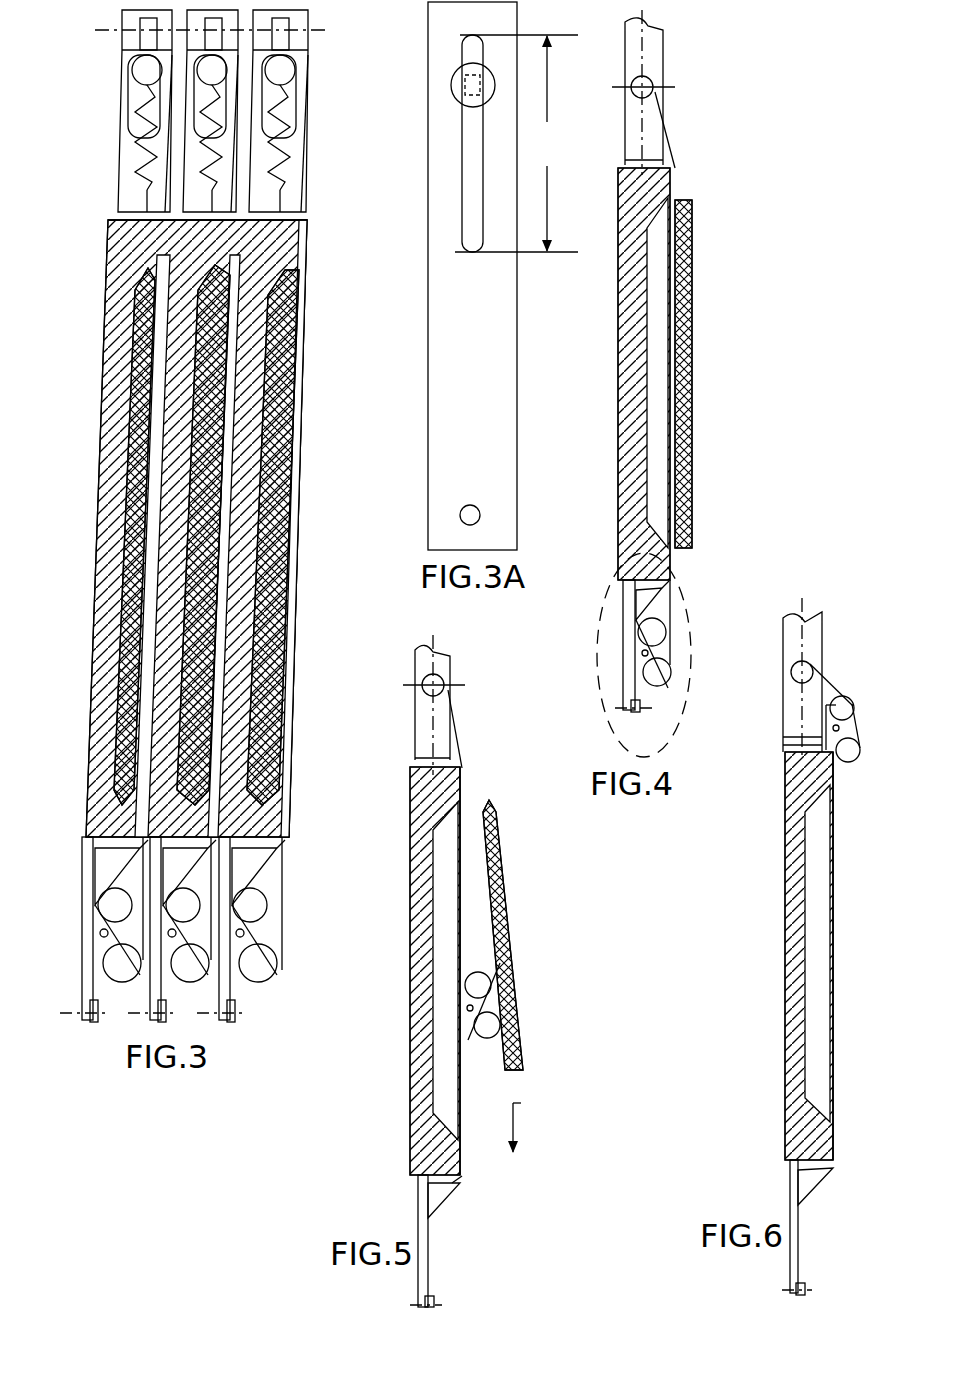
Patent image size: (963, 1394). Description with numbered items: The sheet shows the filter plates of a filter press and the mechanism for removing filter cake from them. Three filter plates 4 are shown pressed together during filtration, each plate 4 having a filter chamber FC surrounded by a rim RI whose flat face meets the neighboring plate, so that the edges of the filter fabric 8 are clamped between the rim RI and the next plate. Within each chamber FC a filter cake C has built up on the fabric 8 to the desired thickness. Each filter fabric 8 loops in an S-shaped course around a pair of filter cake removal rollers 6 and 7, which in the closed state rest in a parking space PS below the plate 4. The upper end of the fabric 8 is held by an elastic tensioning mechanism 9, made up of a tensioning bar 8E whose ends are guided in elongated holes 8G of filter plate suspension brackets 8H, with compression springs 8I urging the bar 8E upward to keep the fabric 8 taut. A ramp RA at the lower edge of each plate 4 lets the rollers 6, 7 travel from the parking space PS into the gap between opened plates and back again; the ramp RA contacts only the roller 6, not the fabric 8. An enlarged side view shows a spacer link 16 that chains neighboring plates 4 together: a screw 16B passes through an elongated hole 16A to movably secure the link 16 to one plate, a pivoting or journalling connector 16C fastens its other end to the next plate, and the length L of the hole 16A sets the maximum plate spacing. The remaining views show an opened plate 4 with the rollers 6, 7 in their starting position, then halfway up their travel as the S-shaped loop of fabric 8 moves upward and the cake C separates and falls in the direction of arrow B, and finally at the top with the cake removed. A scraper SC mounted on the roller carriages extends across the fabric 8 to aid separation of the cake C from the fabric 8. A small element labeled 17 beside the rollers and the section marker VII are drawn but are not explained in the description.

In FIG. 3, the filter plate 4 is at (104, 567).
In FIG. 4, the filter plate 4 is at (626, 490).
In FIG. 5, the filter plate 4 is at (420, 1137).
In FIG. 6, the filter plate 4 is at (790, 1122).
In FIG. 3, the filter cake removal roller 6 is at (256, 904).
In FIG. 4, the filter cake removal roller 6 is at (656, 632).
In FIG. 5, the filter cake removal roller 6 is at (486, 975).
In FIG. 6, the filter cake removal roller 6 is at (848, 706).
In FIG. 3, the filter cake removal roller 7 is at (273, 975).
In FIG. 4, the filter cake removal roller 7 is at (665, 682).
In FIG. 5, the filter cake removal roller 7 is at (494, 1020).
In FIG. 6, the filter cake removal roller 7 is at (858, 740).
In FIG. 3, the filter fabric 8 is at (177, 700).
In FIG. 4, the filter fabric 8 is at (674, 185).
In FIG. 5, the filter fabric 8 is at (462, 1110).
In FIG. 6, the filter fabric 8 is at (833, 952).
In FIG. 3, the tensioning bar 8E is at (138, 68).
In FIG. 3, the elongated holes 8G is at (136, 120).
In FIG. 3, the filter plate suspension brackets 8H is at (130, 195).
In FIG. 3, the compression springs 8I is at (135, 166).
In FIG. 3, the elastic tensioning mechanism 9 is at (318, 56).
In FIG. 4, the elastic tensioning mechanism 9 is at (670, 73).
In FIG. 5, the elastic tensioning mechanism 9 is at (466, 674).
In FIG. 6, the elastic tensioning mechanism 9 is at (828, 664).
In FIG. 3A, the spacer link 16 is at (505, 363).
In FIG. 3A, the elongated hole 16A is at (462, 207).
In FIG. 3A, the screw 16B is at (452, 82).
In FIG. 3A, the pivoting or journalling connector 16C is at (480, 513).
In FIG. 3, the pin 17 is at (104, 933).
In FIG. 4, the pin 17 is at (643, 653).
In FIG. 5, the pin 17 is at (467, 1008).
In FIG. 6, the pin 17 is at (834, 730).
In FIG. 3, the filter cake C is at (150, 357).
In FIG. 4, the filter cake C is at (692, 340).
In FIG. 5, the filter cake C is at (521, 1052).
In FIG. 3, the filter chamber FC is at (305, 306).
In FIG. 4, the filter chamber FC is at (638, 353).
In FIG. 5, the filter chamber FC is at (432, 900).
In FIG. 6, the filter chamber FC is at (818, 882).
In FIG. 3, the ramp RA is at (190, 862).
In FIG. 4, the ramp RA is at (672, 580).
In FIG. 5, the ramp RA is at (455, 1200).
In FIG. 6, the ramp RA is at (825, 1183).
In FIG. 3, the rim RI is at (300, 235).
In FIG. 3, the parking space PS is at (158, 929).
In FIG. 4, the parking space PS is at (633, 646).
In FIG. 5, the parking space PS is at (436, 1235).
In FIG. 6, the parking space PS is at (810, 1210).
In FIG. 5, the scraper SC is at (490, 998).
In FIG. 3A, the length of the elongated hole L is at (516, 143).
In FIG. 5, the arrow B is at (530, 1124).
In FIG. 4, the section indicator VII is at (600, 695).